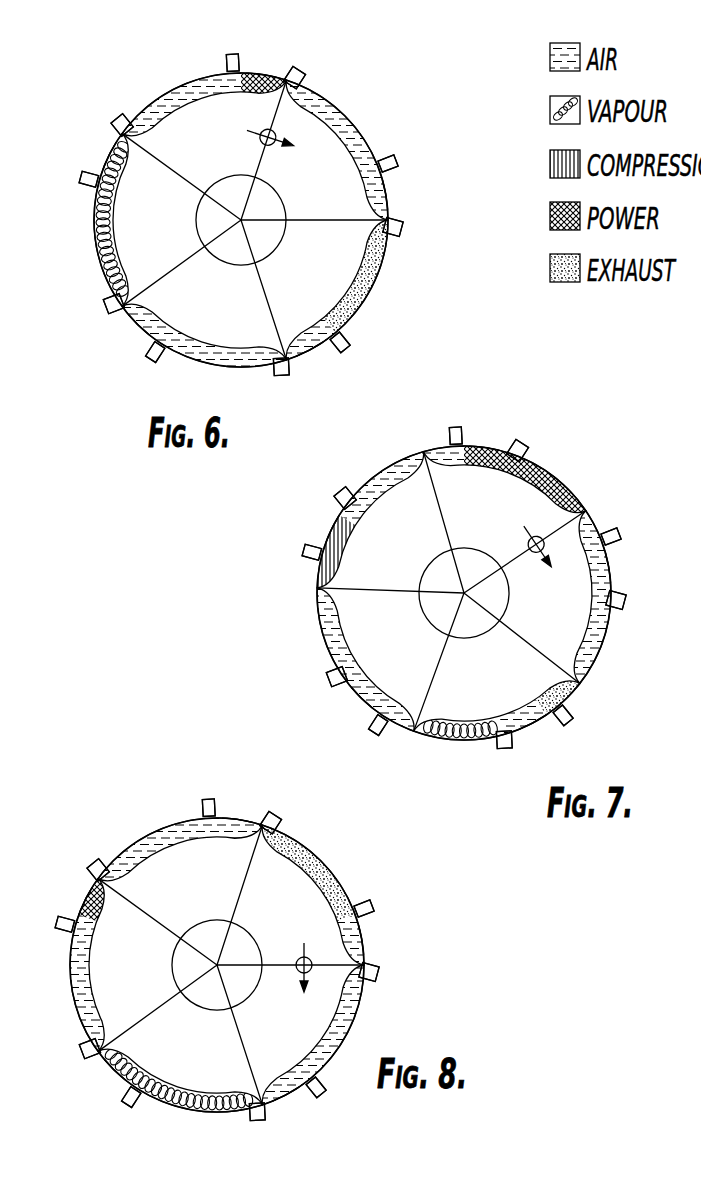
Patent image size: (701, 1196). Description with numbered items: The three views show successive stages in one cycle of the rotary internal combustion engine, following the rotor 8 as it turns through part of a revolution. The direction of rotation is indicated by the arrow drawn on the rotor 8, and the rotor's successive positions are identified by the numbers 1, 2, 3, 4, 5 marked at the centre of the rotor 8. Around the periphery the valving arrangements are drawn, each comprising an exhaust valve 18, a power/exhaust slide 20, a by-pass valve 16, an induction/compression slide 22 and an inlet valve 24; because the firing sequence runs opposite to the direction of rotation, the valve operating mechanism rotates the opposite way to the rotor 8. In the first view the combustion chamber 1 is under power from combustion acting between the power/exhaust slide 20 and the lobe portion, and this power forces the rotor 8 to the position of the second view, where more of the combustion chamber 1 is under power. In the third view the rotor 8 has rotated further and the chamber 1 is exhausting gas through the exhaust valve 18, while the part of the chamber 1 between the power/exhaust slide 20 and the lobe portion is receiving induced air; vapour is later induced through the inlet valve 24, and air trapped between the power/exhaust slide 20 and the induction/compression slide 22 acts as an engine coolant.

In FIG. 6, the rotor 8 is at (241, 220).
In FIG. 7, the rotor 8 is at (464, 593).
In FIG. 8, the rotor 8 is at (217, 965).
In FIG. 6, the by-pass valve 16 is at (248, 218).
In FIG. 7, the by-pass valve 16 is at (467, 590).
In FIG. 8, the by-pass valve 16 is at (226, 955).
In FIG. 6, the exhaust valve 18 is at (234, 209).
In FIG. 7, the exhaust valve 18 is at (457, 580).
In FIG. 8, the exhaust valve 18 is at (209, 955).
In FIG. 6, the power/exhaust slide 20 is at (239, 207).
In FIG. 7, the power/exhaust slide 20 is at (458, 579).
In FIG. 8, the power/exhaust slide 20 is at (218, 945).
In FIG. 6, the induction/compression slide 22 is at (254, 222).
In FIG. 7, the induction/compression slide 22 is at (471, 596).
In FIG. 8, the induction/compression slide 22 is at (229, 966).
In FIG. 6, the inlet valve 24 is at (245, 235).
In FIG. 7, the inlet valve 24 is at (472, 606).
In FIG. 8, the inlet valve 24 is at (220, 974).
In FIG. 6, the combustion chamber 1 is at (230, 192).
In FIG. 7, the combustion chamber 1 is at (477, 565).
In FIG. 8, the combustion chamber 1 is at (246, 943).
In FIG. 6, the rotor position number 2 is at (208, 220).
In FIG. 7, the rotor position number 2 is at (435, 571).
In FIG. 8, the rotor position number 2 is at (206, 937).
In FIG. 6, the rotor position number 3 is at (230, 248).
In FIG. 7, the rotor position number 3 is at (434, 613).
In FIG. 8, the rotor position number 3 is at (184, 965).
In FIG. 6, the rotor position number 4 is at (270, 241).
In FIG. 7, the rotor position number 4 is at (474, 621).
In FIG. 8, the rotor position number 4 is at (206, 993).
In FIG. 6, the rotor position number 5 is at (270, 198).
In FIG. 7, the rotor position number 5 is at (496, 594).
In FIG. 8, the rotor position number 5 is at (246, 986).